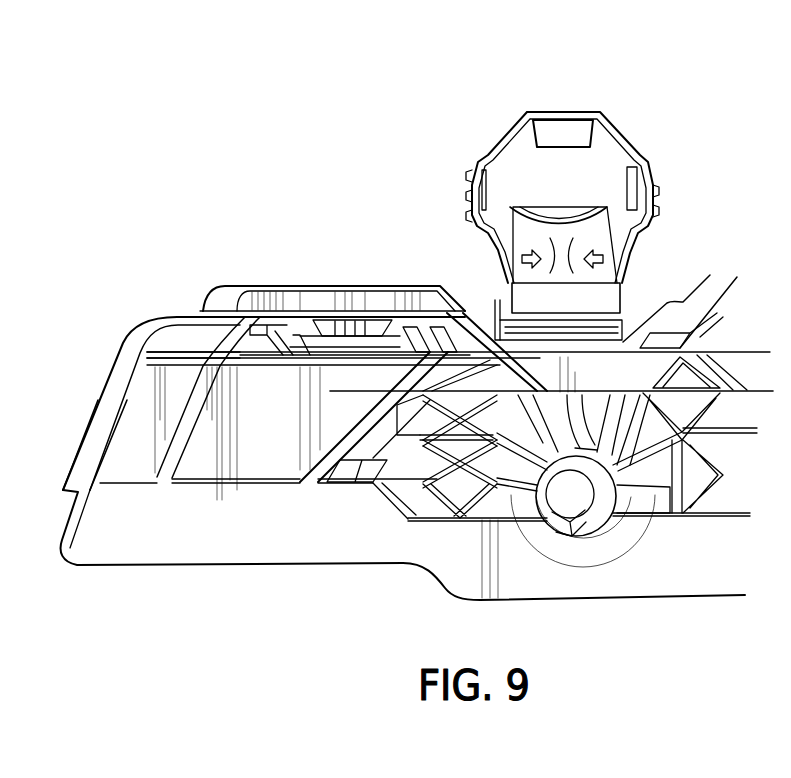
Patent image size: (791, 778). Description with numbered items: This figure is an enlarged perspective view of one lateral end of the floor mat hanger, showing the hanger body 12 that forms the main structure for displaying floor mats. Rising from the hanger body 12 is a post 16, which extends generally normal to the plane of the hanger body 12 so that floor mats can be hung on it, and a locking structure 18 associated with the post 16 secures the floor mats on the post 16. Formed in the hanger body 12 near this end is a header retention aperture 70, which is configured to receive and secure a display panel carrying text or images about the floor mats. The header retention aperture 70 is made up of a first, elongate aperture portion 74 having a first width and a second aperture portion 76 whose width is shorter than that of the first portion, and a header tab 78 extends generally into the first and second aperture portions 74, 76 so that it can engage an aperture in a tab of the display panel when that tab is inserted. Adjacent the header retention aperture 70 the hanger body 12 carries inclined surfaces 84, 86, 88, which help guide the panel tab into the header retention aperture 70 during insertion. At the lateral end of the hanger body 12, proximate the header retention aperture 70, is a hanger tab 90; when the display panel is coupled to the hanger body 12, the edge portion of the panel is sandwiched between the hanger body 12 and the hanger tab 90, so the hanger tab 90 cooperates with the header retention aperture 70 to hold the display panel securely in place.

The hanger body 12 is at (138, 326).
The post 16 is at (558, 510).
The locking structure 18 is at (514, 132).
The header retention aperture 70 is at (331, 341).
The first, elongate aperture portion 74 is at (268, 347).
The second aperture portion 76 is at (363, 343).
The header tab 78 is at (360, 327).
The inclined surface 84 is at (262, 347).
The inclined surface 86 is at (450, 327).
The inclined surface 88 is at (313, 327).
The hanger tab 90 is at (132, 424).